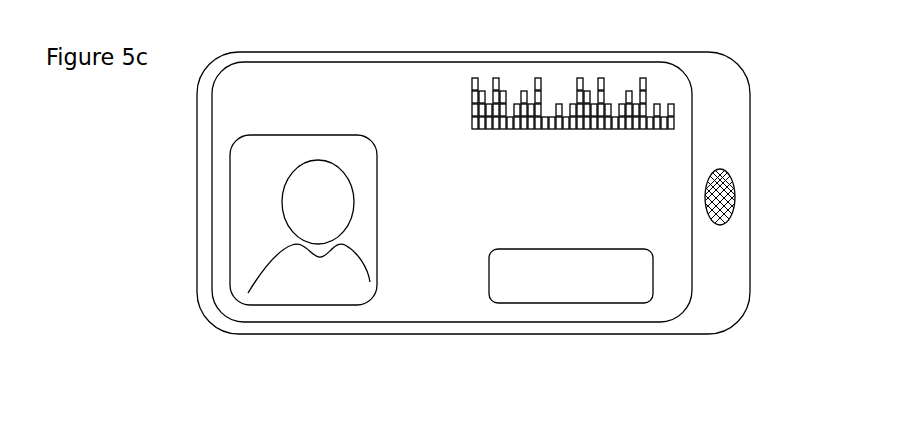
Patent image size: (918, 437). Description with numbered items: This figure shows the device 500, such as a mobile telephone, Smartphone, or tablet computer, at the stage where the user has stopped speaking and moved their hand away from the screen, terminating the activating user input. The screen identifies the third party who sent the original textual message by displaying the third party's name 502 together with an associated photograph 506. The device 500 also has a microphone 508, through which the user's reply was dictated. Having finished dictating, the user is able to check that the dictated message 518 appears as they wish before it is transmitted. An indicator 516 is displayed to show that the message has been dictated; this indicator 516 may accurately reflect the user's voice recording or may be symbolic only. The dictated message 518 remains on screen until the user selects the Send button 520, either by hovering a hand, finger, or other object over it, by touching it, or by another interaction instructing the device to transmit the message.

The device 500 is at (160, 146).
The third party name 502 is at (340, 83).
The photograph 506 is at (243, 256).
The microphone 508 is at (735, 195).
The indicator 516 is at (607, 88).
The dictated message 518 is at (652, 177).
The Send button 520 is at (663, 263).